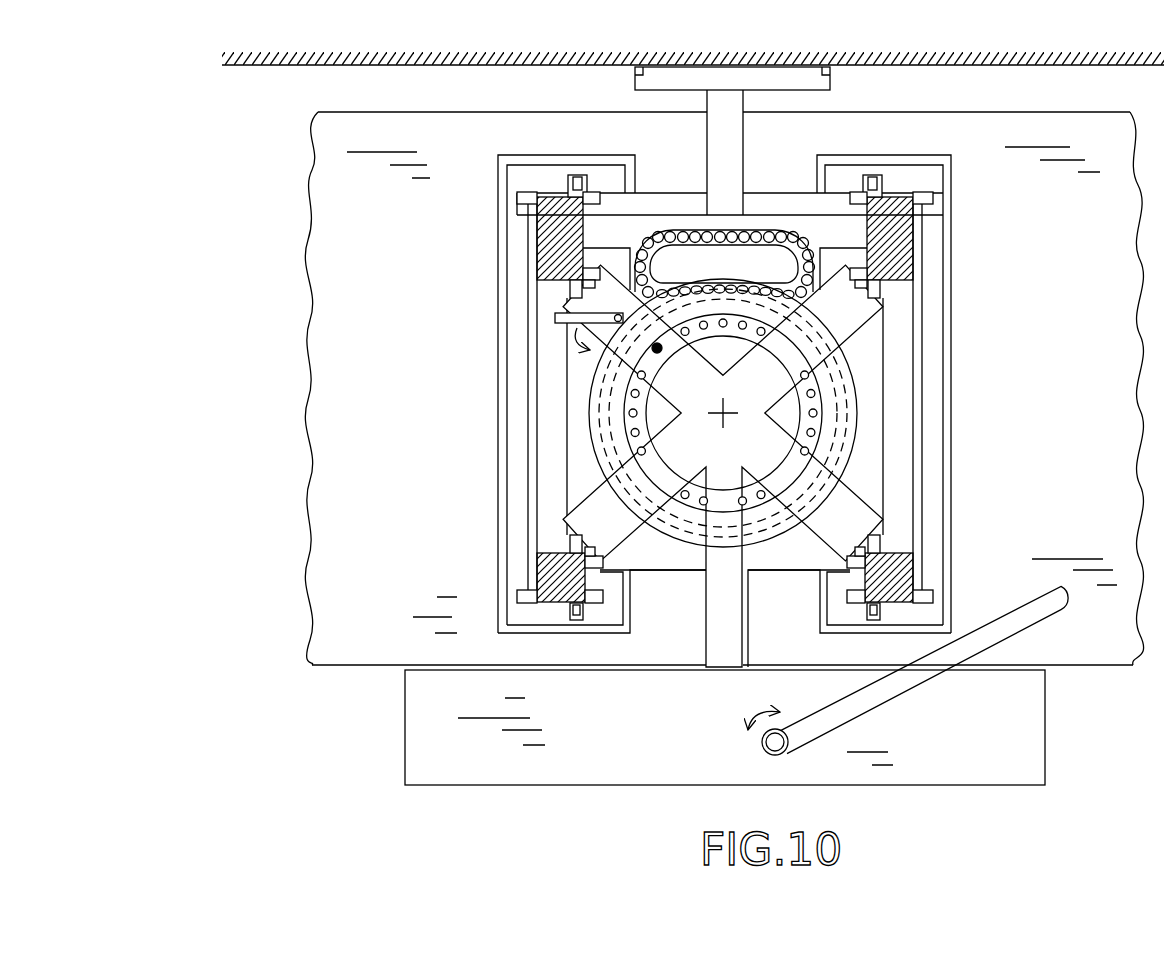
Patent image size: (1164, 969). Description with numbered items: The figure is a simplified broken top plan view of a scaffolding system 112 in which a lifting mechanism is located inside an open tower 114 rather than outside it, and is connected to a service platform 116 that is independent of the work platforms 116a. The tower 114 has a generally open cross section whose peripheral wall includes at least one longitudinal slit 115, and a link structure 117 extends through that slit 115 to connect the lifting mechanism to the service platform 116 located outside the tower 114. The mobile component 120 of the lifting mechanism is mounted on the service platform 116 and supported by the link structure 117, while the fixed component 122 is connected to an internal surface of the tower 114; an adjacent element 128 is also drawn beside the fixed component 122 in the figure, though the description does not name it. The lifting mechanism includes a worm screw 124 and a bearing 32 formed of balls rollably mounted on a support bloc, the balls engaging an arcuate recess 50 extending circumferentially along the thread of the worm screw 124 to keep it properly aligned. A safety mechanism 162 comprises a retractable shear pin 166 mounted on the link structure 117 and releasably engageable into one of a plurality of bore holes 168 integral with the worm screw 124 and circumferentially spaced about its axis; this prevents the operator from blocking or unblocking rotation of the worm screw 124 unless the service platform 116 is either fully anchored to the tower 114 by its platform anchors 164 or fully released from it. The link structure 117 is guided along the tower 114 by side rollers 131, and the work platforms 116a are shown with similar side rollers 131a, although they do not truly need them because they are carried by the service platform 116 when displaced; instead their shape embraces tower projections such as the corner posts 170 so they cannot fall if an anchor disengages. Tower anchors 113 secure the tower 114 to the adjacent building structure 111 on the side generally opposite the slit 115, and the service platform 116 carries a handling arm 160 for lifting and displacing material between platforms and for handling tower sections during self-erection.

The scaffolding system 112 is at (212, 130).
The building structure 111 is at (292, 68).
The tower anchors 113 is at (745, 100).
The work platforms 116a is at (445, 285).
The service platform 116 is at (1020, 777).
The handling arm 160 is at (870, 700).
The tower 114 is at (555, 528).
The longitudinal slit 115 is at (595, 573).
The safety mechanism 162 is at (620, 418).
The link structure 117 is at (833, 522).
The mobile component 120 is at (590, 492).
The worm screw 124 is at (830, 372).
The arcuate recess 50 is at (848, 455).
The bore holes 168 is at (808, 383).
The bearing 32 is at (684, 232).
The fixed component 122 is at (645, 232).
The bearing bracket right 128 is at (827, 262).
The corner posts 170 is at (545, 240).
The side rollers 131a is at (603, 205).
The side rollers 131 is at (887, 258).
The platform anchors 164 is at (578, 318).
The shear pin 166 is at (655, 350).